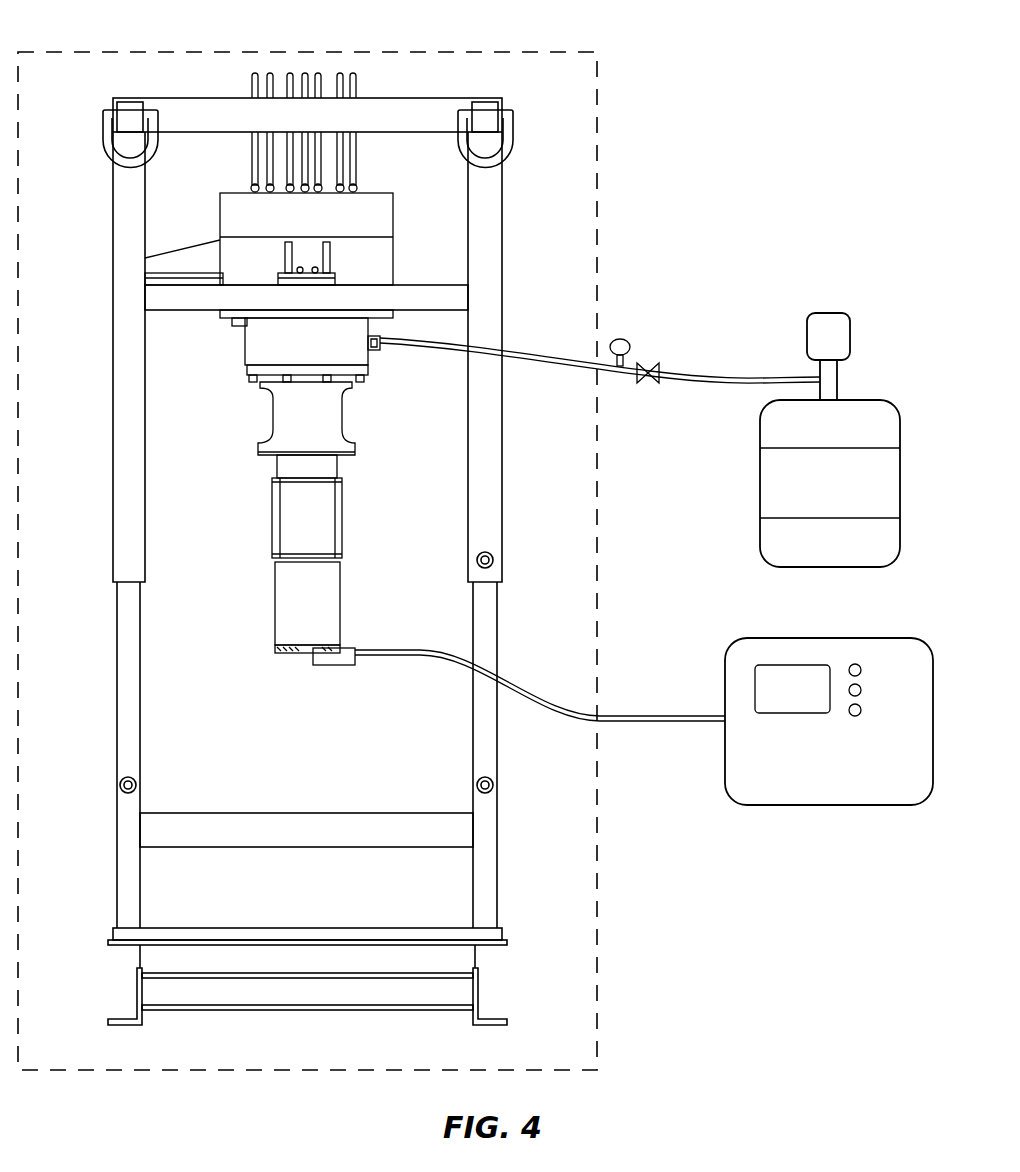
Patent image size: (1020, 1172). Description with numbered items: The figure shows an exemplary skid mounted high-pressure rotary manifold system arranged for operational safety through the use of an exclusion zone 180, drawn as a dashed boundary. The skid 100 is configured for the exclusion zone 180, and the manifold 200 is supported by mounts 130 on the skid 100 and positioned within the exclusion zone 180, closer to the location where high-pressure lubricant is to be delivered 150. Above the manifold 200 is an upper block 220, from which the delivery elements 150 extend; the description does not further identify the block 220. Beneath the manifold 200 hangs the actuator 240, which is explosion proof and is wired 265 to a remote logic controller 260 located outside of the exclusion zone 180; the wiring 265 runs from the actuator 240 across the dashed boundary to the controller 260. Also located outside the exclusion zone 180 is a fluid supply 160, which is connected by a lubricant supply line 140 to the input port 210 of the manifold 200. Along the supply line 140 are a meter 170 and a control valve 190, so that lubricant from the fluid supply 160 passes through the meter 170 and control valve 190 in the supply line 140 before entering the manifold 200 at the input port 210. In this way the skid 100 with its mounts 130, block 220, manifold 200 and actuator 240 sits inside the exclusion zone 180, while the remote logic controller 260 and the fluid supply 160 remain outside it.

The exclusion zone 180 is at (118, 52).
The skid 100 is at (112, 195).
The delivery point for high-pressure lubricant 150 is at (360, 150).
The upper block 220 is at (250, 186).
The mounts 130 is at (183, 258).
The manifold 200 is at (232, 344).
The input port 210 is at (378, 352).
The actuator 240 is at (275, 605).
The lubricant supply line 140 is at (673, 370).
The meter 170 is at (623, 340).
The control valve 190 is at (650, 370).
The fluid supply 160 is at (857, 398).
The remote logic controller 260 is at (827, 637).
The wiring 265 is at (620, 716).